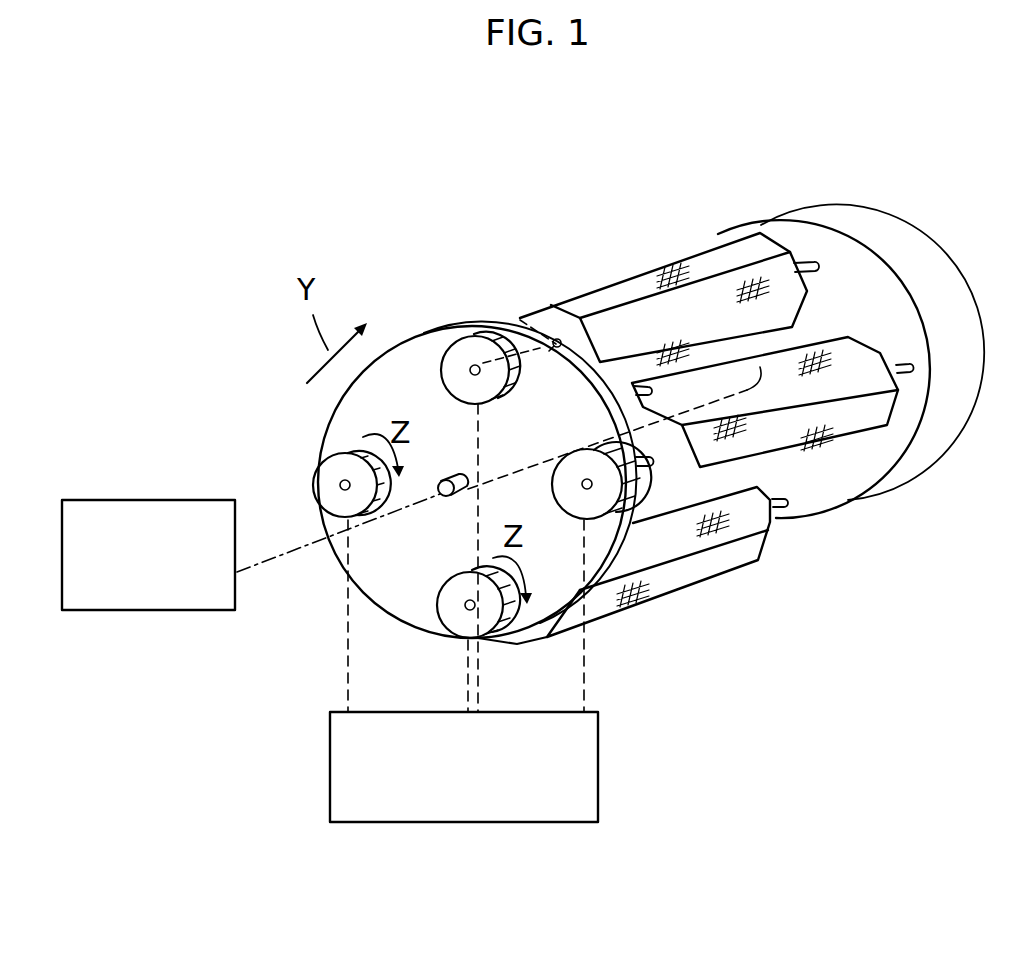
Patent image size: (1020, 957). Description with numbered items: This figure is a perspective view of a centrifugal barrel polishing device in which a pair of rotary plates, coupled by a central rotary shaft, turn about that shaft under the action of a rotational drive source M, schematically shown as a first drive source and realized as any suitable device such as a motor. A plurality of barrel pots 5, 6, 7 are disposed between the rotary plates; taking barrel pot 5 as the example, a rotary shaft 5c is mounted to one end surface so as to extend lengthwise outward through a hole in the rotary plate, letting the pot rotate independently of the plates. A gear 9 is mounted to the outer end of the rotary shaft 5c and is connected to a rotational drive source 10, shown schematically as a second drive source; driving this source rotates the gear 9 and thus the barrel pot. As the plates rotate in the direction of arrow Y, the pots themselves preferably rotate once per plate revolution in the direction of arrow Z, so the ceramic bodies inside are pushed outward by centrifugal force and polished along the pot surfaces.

The barrel pot 5 is at (620, 273).
The rotary shaft 5c is at (537, 358).
The barrel pot 6 is at (852, 428).
The barrel pot 7 is at (677, 592).
The gear 9 is at (453, 344).
The rotational drive source 10 is at (598, 773).
The rotational drive source M is at (152, 612).